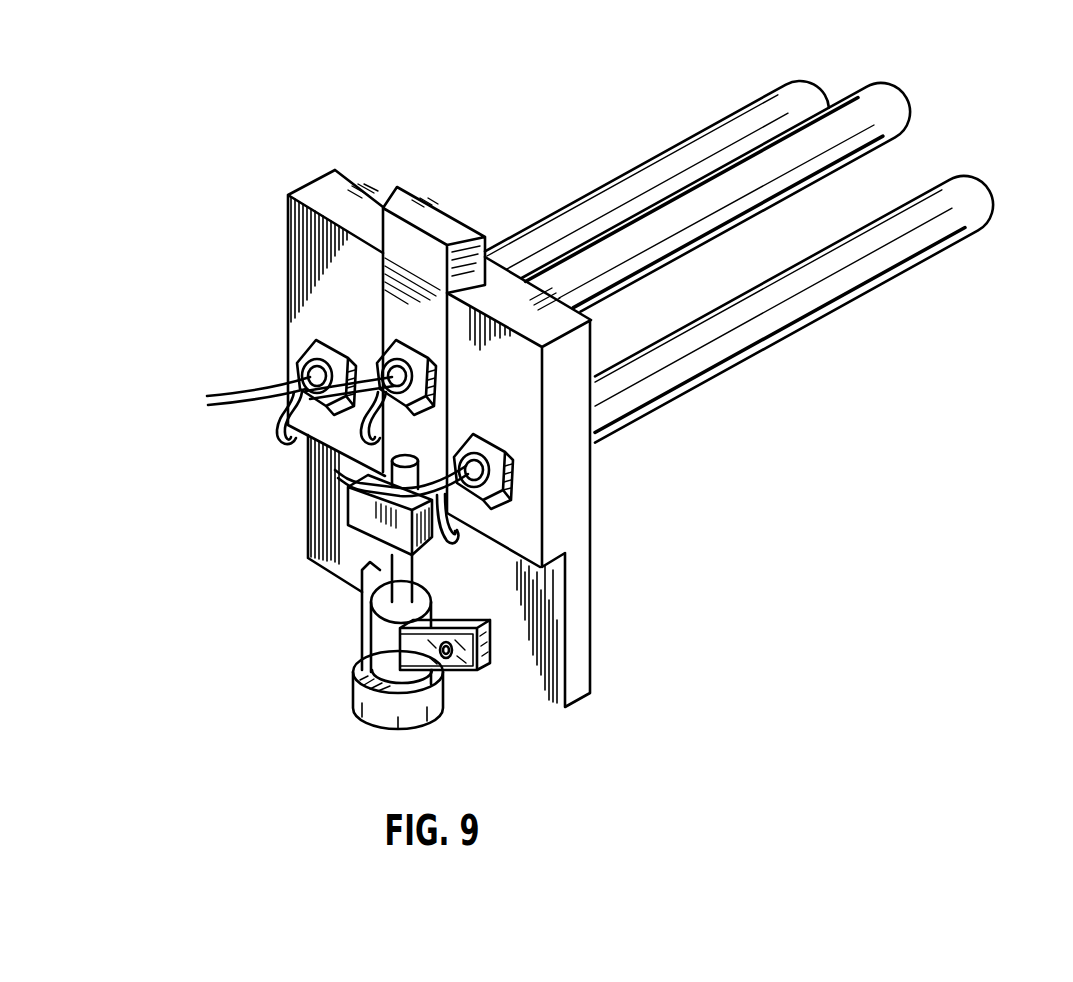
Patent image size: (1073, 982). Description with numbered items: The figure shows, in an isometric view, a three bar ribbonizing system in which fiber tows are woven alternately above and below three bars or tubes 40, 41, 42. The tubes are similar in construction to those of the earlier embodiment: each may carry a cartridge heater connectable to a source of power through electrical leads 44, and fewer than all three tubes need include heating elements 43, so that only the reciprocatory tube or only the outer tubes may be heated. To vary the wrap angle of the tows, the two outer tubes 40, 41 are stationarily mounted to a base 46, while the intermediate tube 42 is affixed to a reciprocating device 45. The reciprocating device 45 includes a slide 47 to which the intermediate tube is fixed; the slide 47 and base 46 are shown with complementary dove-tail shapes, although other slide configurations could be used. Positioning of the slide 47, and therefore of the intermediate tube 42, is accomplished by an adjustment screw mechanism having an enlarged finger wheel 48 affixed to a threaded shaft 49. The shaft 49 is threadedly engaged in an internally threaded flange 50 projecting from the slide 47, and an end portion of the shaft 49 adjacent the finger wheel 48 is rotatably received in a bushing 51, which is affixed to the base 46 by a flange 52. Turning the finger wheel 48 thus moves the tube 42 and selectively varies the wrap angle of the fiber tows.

The tube 40 is at (815, 89).
The tube 41 is at (968, 183).
The intermediate tube 42 is at (893, 97).
The heating element 43 is at (497, 508).
The electrical leads 44 is at (280, 443).
The reciprocating device 45 is at (337, 520).
The base 46 is at (286, 313).
The slide 47 is at (376, 212).
The finger wheel 48 is at (356, 706).
The threaded shaft 49 is at (412, 572).
The internally threaded flange 50 is at (315, 507).
The bushing 51 is at (372, 636).
The flange 52 is at (480, 665).